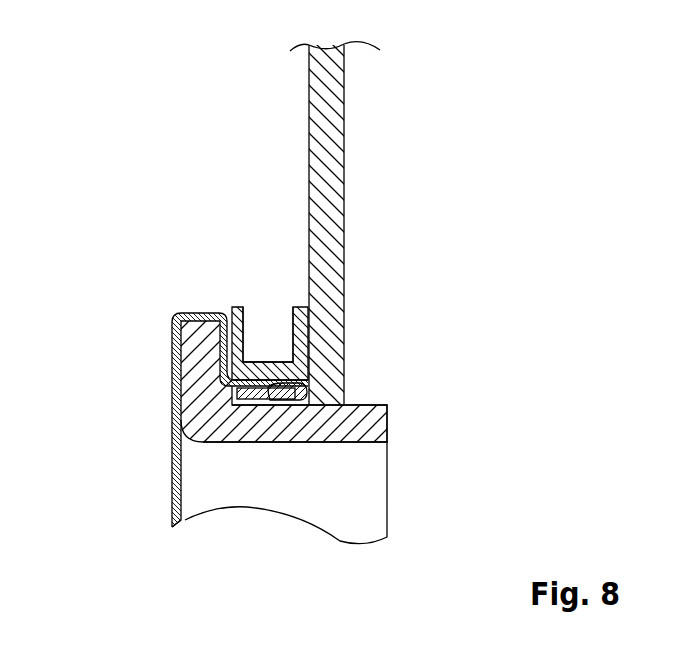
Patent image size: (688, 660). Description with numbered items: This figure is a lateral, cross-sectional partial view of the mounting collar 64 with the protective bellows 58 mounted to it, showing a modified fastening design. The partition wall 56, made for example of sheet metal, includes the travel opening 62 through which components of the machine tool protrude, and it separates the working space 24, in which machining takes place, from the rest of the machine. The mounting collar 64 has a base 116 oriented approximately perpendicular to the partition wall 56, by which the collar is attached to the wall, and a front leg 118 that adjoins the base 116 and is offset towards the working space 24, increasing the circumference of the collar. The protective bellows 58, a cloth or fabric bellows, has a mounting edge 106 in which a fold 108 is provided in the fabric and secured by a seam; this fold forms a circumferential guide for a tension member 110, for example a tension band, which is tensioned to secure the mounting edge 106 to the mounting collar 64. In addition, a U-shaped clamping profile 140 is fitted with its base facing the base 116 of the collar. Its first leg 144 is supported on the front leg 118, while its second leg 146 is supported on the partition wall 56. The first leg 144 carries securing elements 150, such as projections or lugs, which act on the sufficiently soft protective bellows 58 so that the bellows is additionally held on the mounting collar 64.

The partition wall 56 is at (322, 108).
The clamping profile 140 is at (260, 362).
The first leg 144 is at (230, 308).
The fold 108 is at (262, 380).
The second leg 146 is at (286, 367).
The tension member 110 is at (297, 400).
The mounting edge 106 is at (313, 408).
The front leg 118 is at (176, 363).
The securing elements 150 is at (177, 377).
The working space 24 is at (117, 502).
The protective bellows 58 is at (170, 507).
The mounting collar 64 is at (220, 443).
The base 116 is at (274, 443).
The travel opening 62 is at (320, 506).